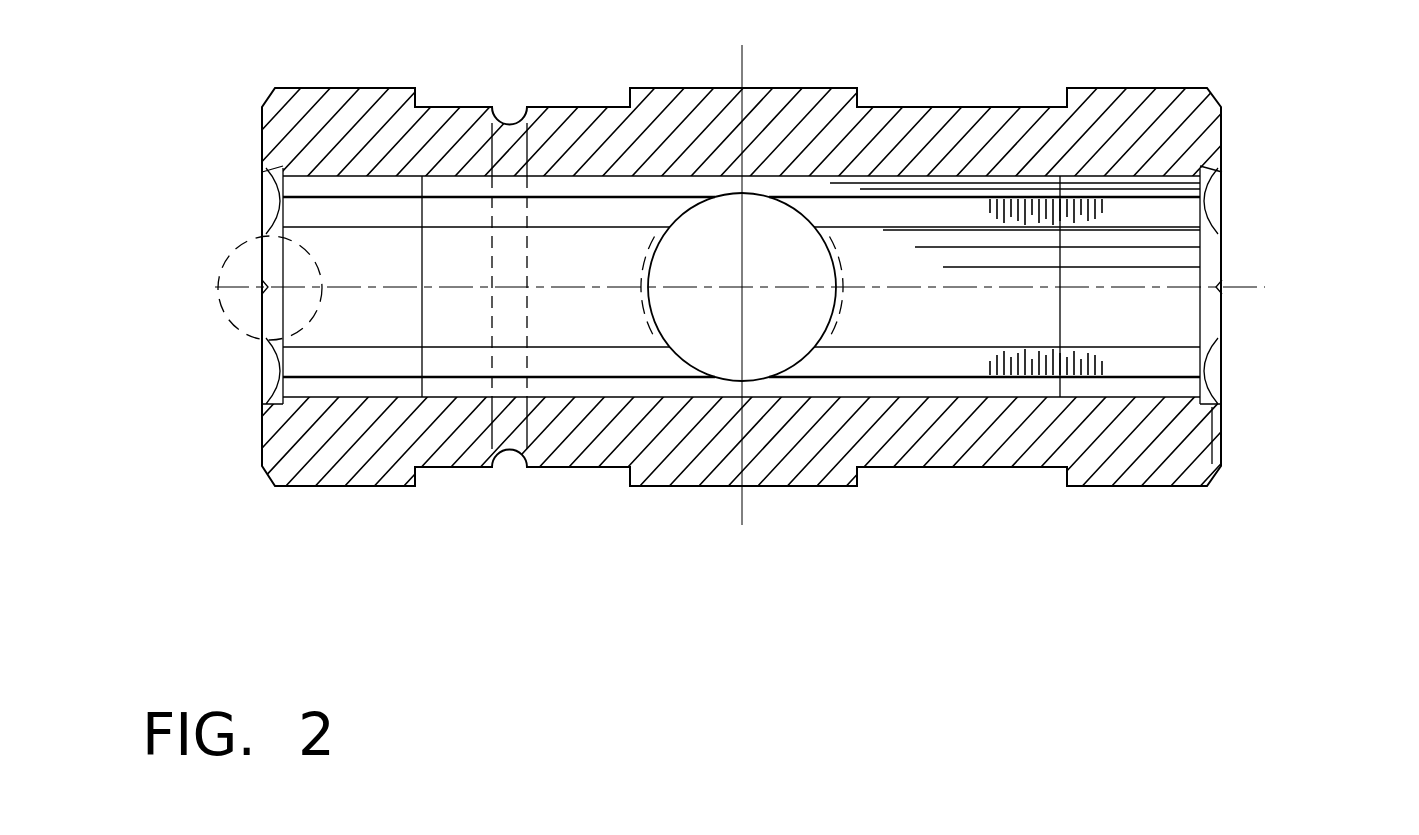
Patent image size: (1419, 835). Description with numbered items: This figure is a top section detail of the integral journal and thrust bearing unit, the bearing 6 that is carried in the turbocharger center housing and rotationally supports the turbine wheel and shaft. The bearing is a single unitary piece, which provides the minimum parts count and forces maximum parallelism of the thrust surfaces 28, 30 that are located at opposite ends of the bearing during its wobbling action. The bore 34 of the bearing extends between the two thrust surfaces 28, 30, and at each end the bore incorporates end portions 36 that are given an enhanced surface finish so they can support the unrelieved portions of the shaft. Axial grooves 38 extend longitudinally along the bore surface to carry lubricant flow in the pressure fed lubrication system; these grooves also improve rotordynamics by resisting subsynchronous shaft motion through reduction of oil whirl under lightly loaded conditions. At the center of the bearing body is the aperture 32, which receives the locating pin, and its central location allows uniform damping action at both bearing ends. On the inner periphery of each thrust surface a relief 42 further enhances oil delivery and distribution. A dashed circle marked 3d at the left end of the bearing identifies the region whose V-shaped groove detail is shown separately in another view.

The bearing 6 is at (1083, 516).
The thrust surface 28 is at (258, 443).
The thrust surface 30 is at (1225, 433).
The aperture 32 is at (802, 360).
The bore 34 is at (622, 395).
The end portions 36 is at (300, 387).
The axial grooves 38 is at (968, 207).
The relief 42 is at (277, 167).
The section detail 3d is at (222, 248).